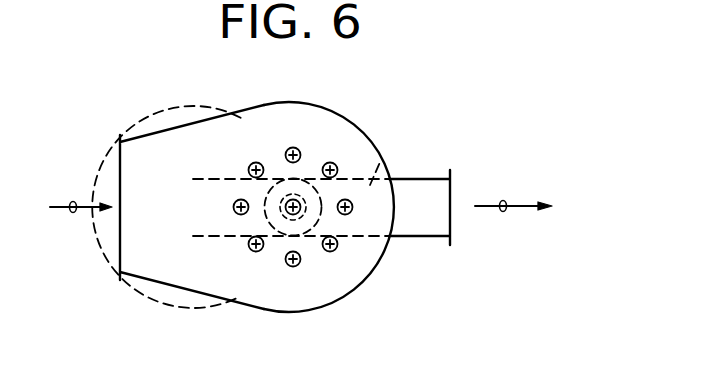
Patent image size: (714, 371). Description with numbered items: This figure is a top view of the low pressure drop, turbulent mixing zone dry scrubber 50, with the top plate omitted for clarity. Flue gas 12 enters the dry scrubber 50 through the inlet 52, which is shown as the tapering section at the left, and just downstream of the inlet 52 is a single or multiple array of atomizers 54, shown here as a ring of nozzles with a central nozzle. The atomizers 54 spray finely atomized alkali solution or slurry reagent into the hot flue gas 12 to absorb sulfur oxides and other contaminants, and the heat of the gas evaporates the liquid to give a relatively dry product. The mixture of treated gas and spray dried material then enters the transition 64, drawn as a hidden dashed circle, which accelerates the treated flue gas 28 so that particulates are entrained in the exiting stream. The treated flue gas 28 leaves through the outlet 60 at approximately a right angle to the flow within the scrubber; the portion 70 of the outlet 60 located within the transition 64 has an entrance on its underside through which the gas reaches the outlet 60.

The flue gas 12 is at (73, 201).
The treated flue gas 28 is at (505, 212).
The dry scrubber 50 is at (405, 116).
The inlet 52 is at (167, 266).
The atomizers 54 is at (297, 150).
The outlet 60 is at (420, 222).
The transition 64 is at (256, 126).
The portion of outlet located within transition 70 is at (383, 158).